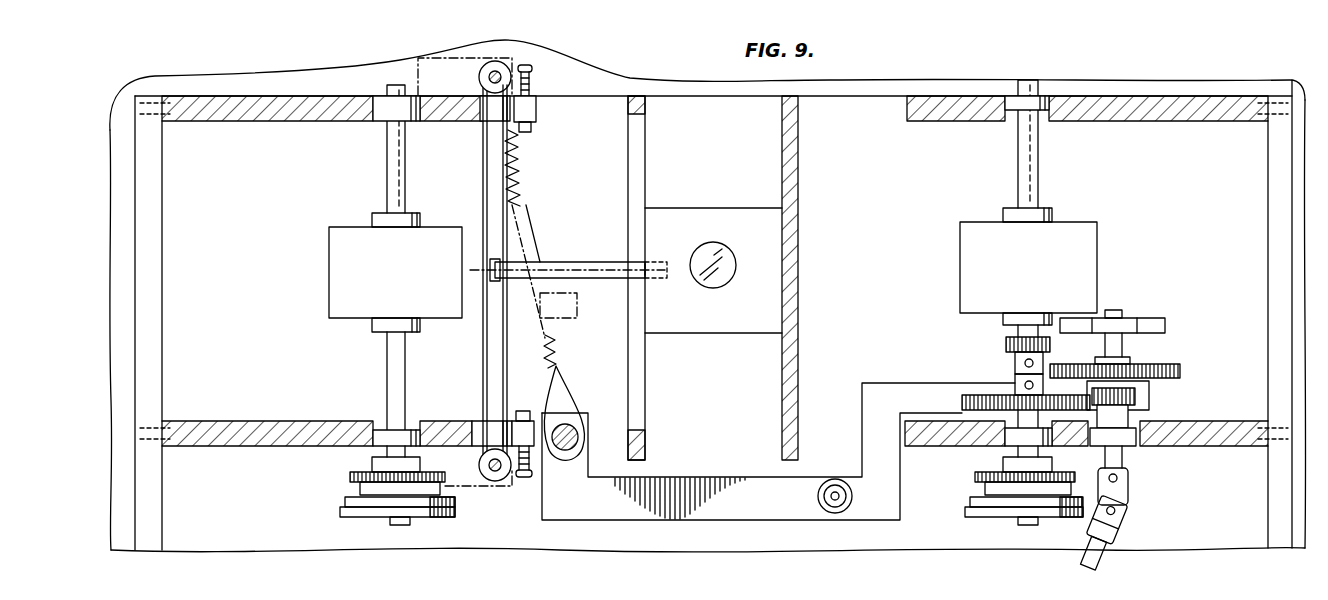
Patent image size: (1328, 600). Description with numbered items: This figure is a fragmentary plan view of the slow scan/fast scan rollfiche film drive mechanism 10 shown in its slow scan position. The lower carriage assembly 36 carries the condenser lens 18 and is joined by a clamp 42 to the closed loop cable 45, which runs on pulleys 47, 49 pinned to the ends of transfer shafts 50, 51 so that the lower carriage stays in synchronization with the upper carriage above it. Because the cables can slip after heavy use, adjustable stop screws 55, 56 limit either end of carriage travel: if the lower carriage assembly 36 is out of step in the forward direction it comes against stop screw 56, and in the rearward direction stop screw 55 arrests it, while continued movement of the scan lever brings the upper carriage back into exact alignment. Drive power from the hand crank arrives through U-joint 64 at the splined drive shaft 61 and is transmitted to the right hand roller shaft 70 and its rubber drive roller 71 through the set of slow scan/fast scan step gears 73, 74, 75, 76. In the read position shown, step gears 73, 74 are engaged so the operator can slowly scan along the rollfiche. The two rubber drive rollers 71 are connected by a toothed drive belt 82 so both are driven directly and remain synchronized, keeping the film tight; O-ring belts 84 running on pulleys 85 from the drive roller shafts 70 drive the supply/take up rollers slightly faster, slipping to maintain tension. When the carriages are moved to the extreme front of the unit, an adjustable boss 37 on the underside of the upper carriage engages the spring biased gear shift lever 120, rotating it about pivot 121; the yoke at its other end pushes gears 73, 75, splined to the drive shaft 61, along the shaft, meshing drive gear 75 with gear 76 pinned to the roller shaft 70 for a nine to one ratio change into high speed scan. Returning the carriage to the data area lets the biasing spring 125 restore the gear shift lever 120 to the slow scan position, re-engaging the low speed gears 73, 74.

The apparatus frame 10 is at (110, 120).
The condenser lens 18 is at (726, 284).
The lower carriage assembly 36 is at (680, 208).
The adjustable boss 37 is at (568, 318).
The clamp 42 is at (512, 262).
The cable 45 is at (483, 377).
The pulley 47 is at (505, 66).
The pulley 49 is at (490, 480).
The transfer shaft 50 is at (500, 482).
The transfer shaft 51 is at (479, 77).
The stop screw 55 is at (536, 127).
The stop screw 56 is at (553, 400).
The drive shaft 61 is at (1125, 460).
The U-joint 64 is at (1135, 524).
The drive roller shaft 70 is at (387, 172).
The drive roller 71 is at (329, 293).
The step gear 73 is at (1135, 395).
The step gear 74 is at (962, 402).
The step gear 75 is at (1180, 371).
The step gear 76 is at (1006, 345).
The toothed drive belt 82 is at (362, 487).
The O-ring belt 84 is at (348, 504).
The pulley 85 is at (374, 510).
The gear shift lever 120 is at (712, 476).
The pivot 121 is at (835, 486).
The biasing spring 125 is at (520, 200).